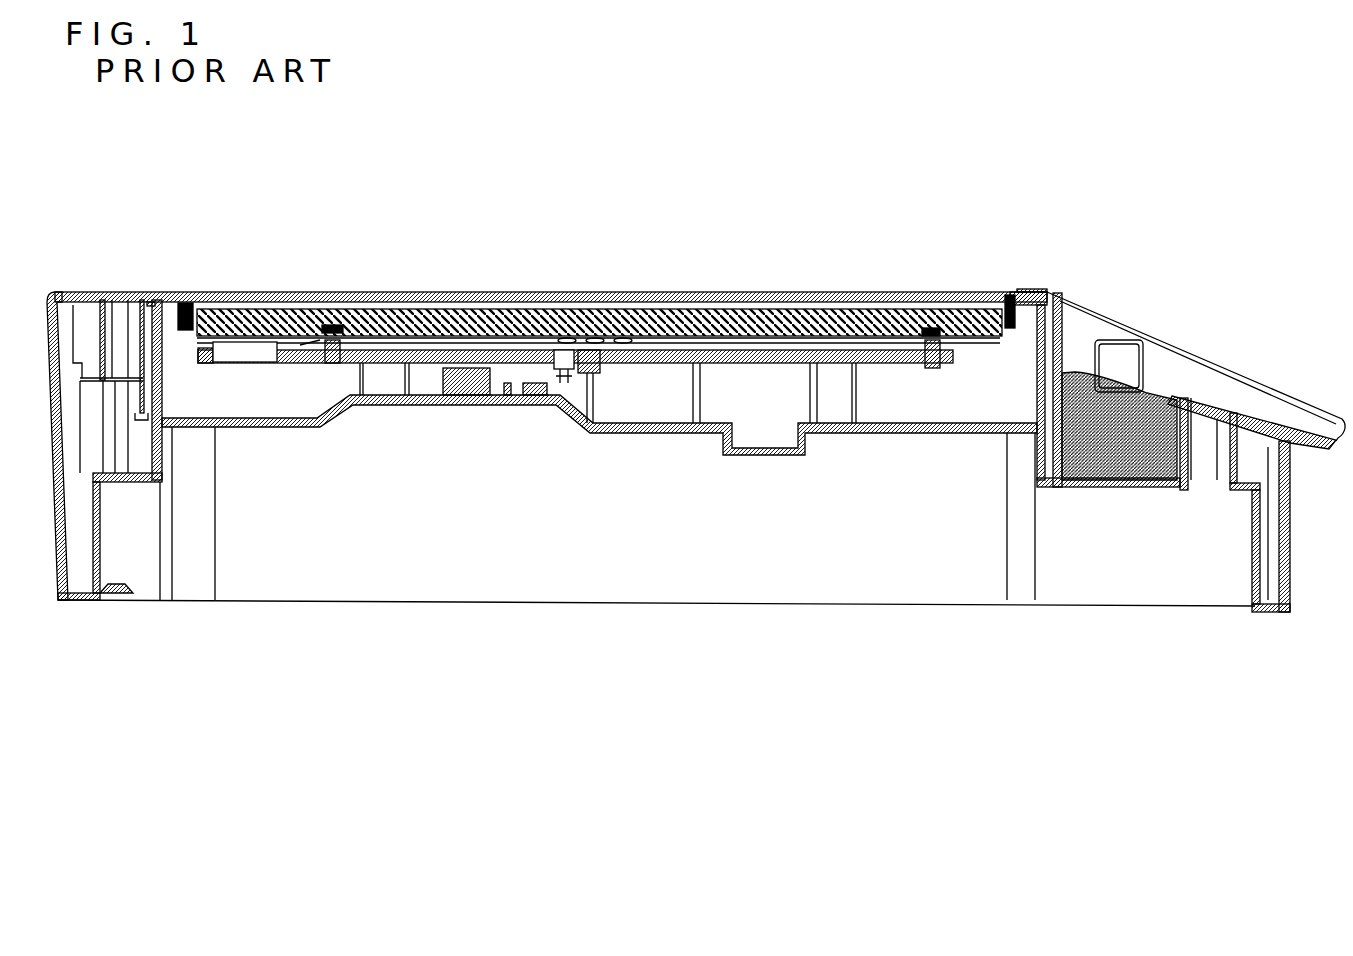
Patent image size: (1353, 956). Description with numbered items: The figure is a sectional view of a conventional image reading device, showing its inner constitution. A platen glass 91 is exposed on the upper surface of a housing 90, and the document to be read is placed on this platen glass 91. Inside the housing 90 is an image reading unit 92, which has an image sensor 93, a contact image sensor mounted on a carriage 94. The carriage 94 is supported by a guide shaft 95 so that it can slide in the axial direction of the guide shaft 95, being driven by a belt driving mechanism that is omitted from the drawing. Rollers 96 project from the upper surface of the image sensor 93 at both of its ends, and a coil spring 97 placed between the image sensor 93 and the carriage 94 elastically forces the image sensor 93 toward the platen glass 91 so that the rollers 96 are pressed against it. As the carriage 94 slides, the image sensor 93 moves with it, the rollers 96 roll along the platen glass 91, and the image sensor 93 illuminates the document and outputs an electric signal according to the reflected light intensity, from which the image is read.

The housing 90 is at (328, 628).
The platen glass 91 is at (453, 300).
The image reading unit 92 is at (730, 377).
The image sensor 93 is at (541, 325).
The carriage 94 is at (883, 363).
The guide shaft 95 is at (593, 377).
The rollers 96 is at (186, 310).
The coil spring 97 is at (320, 352).